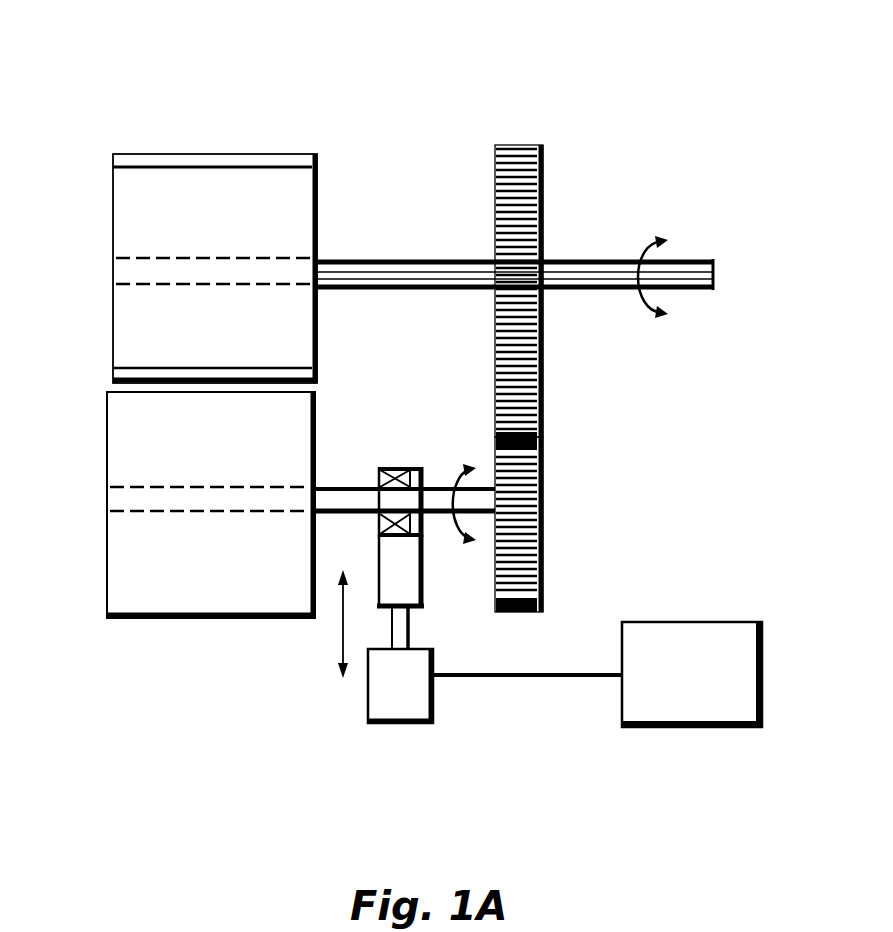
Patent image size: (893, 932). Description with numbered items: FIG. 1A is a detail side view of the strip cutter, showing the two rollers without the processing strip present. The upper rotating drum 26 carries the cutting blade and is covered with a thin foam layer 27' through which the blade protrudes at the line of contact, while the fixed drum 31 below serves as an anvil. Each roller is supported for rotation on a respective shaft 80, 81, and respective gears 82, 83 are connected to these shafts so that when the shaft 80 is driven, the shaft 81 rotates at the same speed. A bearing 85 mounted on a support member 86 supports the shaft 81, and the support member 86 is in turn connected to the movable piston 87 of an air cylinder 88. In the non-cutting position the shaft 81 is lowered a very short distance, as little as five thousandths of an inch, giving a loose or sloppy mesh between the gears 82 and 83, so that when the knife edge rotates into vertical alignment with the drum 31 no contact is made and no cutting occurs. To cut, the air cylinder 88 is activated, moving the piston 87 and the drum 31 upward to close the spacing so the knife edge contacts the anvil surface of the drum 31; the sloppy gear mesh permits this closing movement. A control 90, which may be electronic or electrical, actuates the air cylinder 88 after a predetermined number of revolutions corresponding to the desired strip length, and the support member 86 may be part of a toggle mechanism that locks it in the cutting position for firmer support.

The rotating drum 26 is at (113, 215).
The thin foam layer 27' is at (212, 92).
The fixed drum 31 is at (107, 553).
The shaft 80 is at (446, 260).
The shaft 81 is at (317, 452).
The gear 82 is at (546, 191).
The gear 83 is at (542, 467).
The bearing 85 is at (408, 468).
The support member 86 is at (425, 560).
The movable piston 87 is at (413, 630).
The air cylinder 88 is at (435, 697).
The control 90 is at (743, 620).